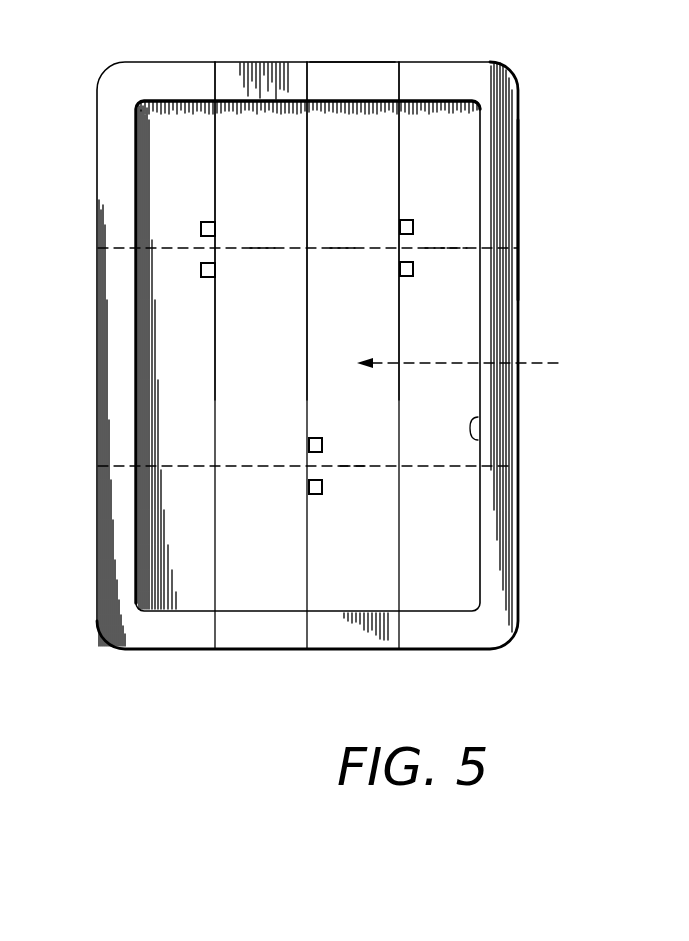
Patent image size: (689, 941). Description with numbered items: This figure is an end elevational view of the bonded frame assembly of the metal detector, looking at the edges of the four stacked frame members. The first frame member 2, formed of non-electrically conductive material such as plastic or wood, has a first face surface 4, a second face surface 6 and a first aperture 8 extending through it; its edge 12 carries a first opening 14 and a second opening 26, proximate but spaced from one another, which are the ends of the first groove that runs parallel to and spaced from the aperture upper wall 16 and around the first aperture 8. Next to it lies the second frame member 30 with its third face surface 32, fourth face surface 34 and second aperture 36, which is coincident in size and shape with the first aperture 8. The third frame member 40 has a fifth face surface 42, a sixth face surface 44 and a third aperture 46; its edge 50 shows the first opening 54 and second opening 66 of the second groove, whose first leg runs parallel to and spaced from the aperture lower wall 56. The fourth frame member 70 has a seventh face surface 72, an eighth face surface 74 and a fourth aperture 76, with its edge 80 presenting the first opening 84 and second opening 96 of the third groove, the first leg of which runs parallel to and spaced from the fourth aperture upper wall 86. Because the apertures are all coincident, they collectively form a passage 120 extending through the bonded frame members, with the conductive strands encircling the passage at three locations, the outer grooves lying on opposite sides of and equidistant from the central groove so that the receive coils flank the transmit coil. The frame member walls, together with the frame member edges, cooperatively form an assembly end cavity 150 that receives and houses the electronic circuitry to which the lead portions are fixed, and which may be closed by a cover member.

The first frame member 2 is at (97, 165).
The first face surface 4 is at (98, 557).
The second face surface 6 is at (216, 590).
The first aperture 8 is at (183, 467).
The edge 12 is at (172, 393).
The first opening 14 is at (206, 222).
The aperture upper wall 16 is at (162, 250).
The second opening 26 is at (207, 278).
The second frame member 30 is at (276, 72).
The third face surface 32 is at (213, 130).
The fourth face surface 34 is at (308, 590).
The second aperture 36 is at (262, 250).
The third frame member 40 is at (330, 62).
The fifth face surface 42 is at (306, 150).
The sixth face surface 44 is at (400, 590).
The third aperture 46 is at (343, 250).
The edge 50 is at (377, 180).
The first opening 54 is at (317, 494).
The aperture lower wall 56 is at (352, 466).
The second opening 66 is at (316, 438).
The fourth frame member 70 is at (518, 218).
The seventh face surface 72 is at (397, 143).
The eighth face surface 74 is at (518, 163).
The fourth aperture 76 is at (457, 250).
The edge 80 is at (455, 162).
The first opening 84 is at (410, 220).
The fourth aperture upper wall 86 is at (435, 250).
The second opening 96 is at (410, 278).
The passage 120 is at (482, 363).
The assembly end cavity 150 is at (478, 417).